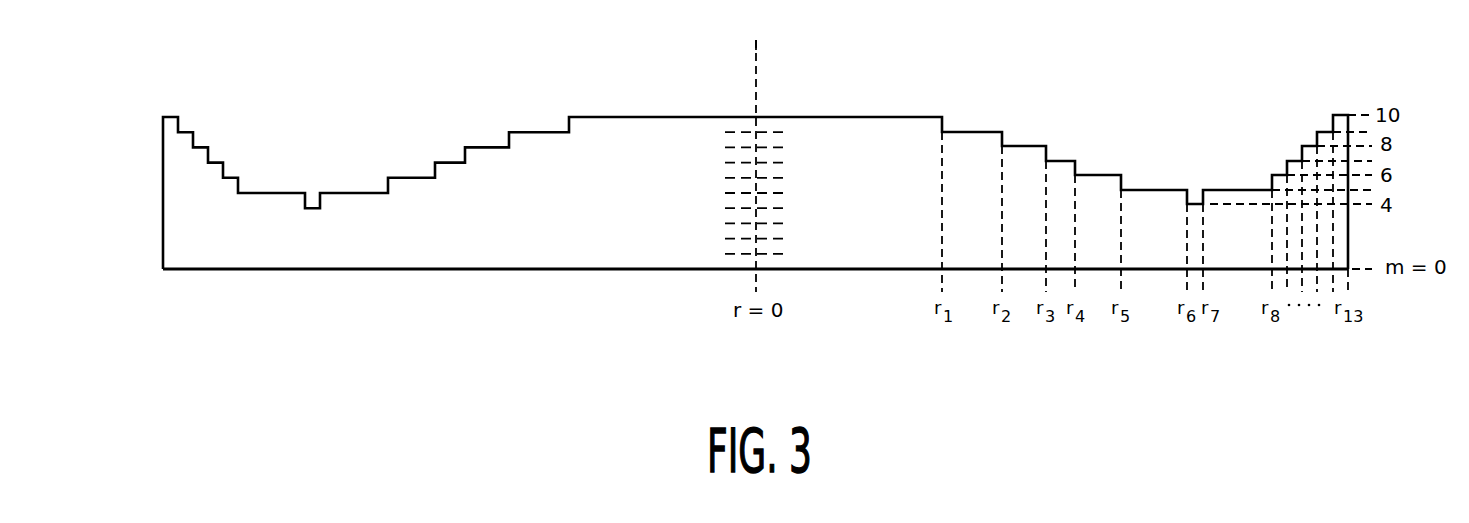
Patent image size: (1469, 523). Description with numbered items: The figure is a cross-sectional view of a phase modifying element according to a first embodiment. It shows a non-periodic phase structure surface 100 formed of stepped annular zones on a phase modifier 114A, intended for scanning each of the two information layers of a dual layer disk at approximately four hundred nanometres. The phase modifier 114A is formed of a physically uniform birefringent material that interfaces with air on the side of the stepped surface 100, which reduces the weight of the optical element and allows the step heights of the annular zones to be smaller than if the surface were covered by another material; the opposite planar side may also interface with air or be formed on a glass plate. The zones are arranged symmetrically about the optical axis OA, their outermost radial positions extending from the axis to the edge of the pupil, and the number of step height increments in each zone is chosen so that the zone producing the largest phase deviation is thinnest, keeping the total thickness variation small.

The non-periodic phase structure surface 100 is at (485, 146).
The phase modifier 114A is at (205, 255).
The optical axis OA is at (757, 45).